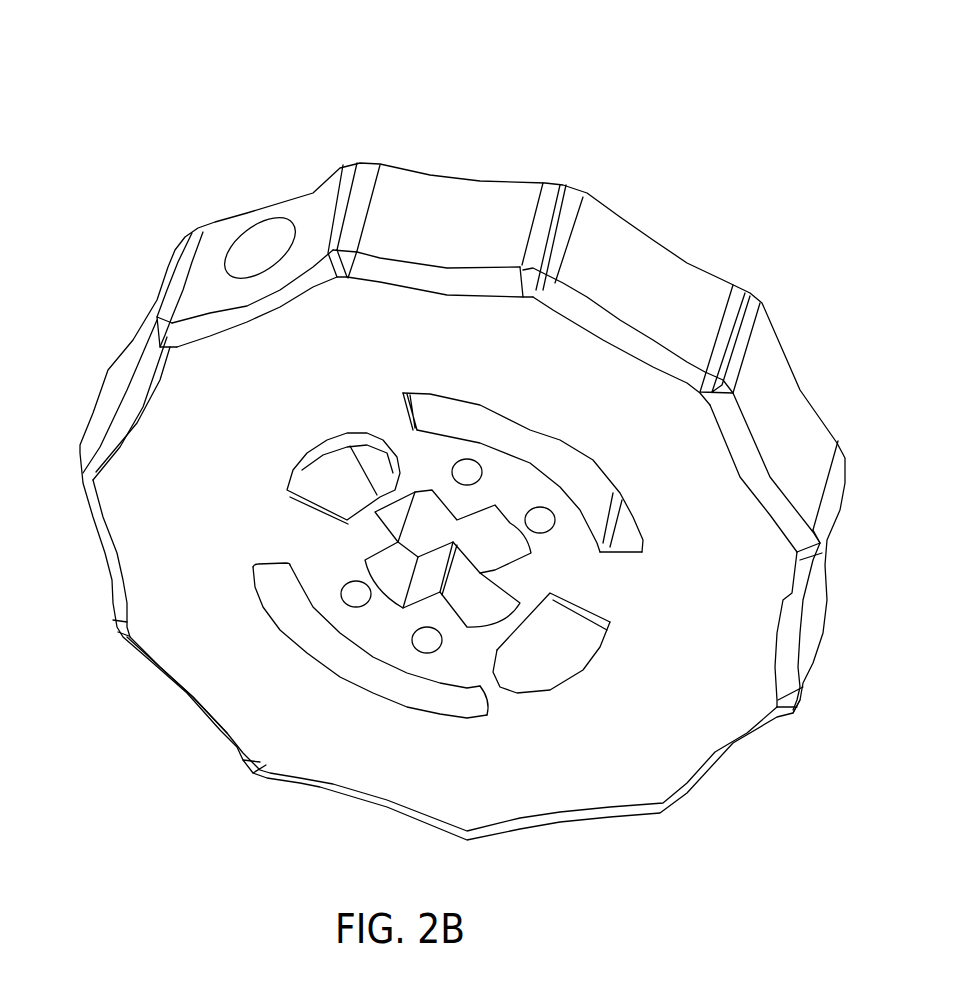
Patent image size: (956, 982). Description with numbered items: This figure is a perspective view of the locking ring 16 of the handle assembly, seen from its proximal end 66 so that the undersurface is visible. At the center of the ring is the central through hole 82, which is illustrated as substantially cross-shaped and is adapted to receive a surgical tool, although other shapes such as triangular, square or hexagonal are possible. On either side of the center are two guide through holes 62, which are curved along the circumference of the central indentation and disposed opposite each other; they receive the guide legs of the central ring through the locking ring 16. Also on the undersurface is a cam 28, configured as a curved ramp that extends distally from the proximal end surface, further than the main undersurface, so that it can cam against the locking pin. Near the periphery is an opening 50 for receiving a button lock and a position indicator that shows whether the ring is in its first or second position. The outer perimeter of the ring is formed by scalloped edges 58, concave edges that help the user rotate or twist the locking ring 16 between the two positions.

The locking ring 16 is at (112, 93).
The cam 28 is at (372, 462).
The opening 50 is at (268, 222).
The scalloped edges 58 is at (800, 390).
The guide through holes 62 is at (543, 453).
The proximal end 66 is at (200, 647).
The central through hole 82 is at (440, 487).